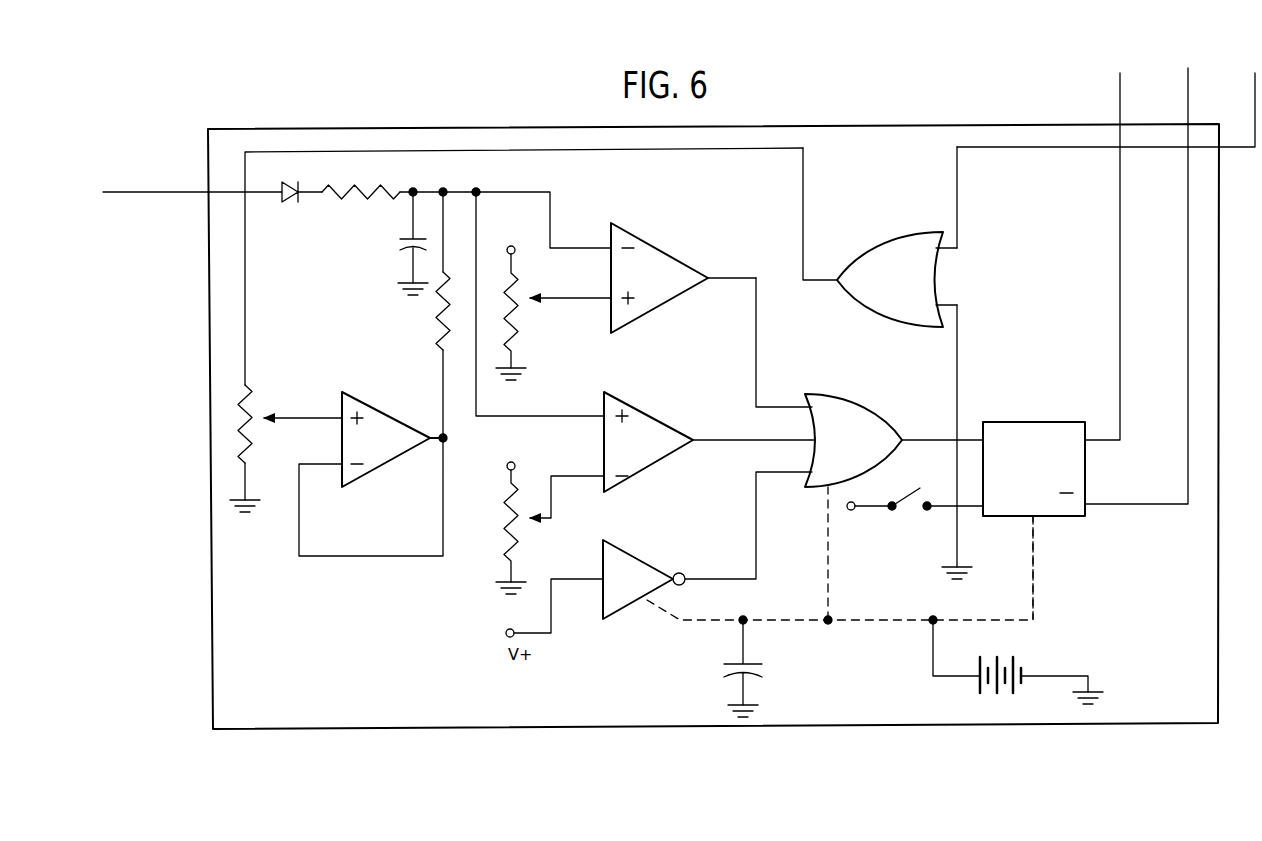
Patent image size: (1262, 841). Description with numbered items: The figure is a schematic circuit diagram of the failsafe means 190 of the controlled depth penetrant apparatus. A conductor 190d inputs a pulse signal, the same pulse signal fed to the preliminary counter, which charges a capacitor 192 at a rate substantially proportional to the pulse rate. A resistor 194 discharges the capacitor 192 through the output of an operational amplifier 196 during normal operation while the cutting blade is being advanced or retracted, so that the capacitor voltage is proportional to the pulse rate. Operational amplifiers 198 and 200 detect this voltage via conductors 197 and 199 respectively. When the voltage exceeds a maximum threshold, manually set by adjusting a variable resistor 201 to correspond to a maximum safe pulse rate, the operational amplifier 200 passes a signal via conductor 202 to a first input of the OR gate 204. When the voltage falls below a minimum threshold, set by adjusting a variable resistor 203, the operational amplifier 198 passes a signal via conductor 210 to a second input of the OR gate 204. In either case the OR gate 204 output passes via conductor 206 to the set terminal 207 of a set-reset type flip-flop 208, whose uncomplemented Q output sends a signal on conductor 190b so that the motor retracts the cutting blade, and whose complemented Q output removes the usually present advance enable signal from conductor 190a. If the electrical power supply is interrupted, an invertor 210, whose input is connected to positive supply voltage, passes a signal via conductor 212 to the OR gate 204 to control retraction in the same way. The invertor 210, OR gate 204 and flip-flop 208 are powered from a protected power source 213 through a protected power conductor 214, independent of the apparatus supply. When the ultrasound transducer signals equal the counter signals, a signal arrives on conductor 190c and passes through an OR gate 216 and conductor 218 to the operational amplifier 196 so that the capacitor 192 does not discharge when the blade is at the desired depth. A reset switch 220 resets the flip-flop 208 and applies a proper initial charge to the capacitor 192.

The failsafe means 190 is at (383, 731).
The conductor 190a is at (1185, 87).
The conductor 190b is at (1117, 93).
The conductor 190c is at (1252, 108).
The conductor 190d is at (190, 198).
The capacitor 192 is at (399, 242).
The resistor 194 is at (438, 312).
The operational amplifier 196 is at (378, 362).
The conductor 197 is at (591, 246).
The operational amplifier 198 is at (699, 267).
The conductor 199 is at (553, 413).
The operational amplifier 200 is at (677, 411).
The variable resistor 201 is at (524, 541).
The conductor 202 is at (762, 435).
The variable resistor 203 is at (524, 310).
The OR gate 204 is at (813, 393).
The conductor 206 is at (930, 435).
The set terminal 207 is at (978, 436).
The set-reset type flip-flop 208 is at (1033, 420).
The conductor / invertor 210 is at (766, 240).
The conductor 212 is at (748, 560).
The protected power source 213 is at (1026, 664).
The protected power conductor 214 is at (1038, 572).
The OR gate 216 is at (874, 242).
The conductor 218 is at (796, 260).
The reset switch 220 is at (896, 491).